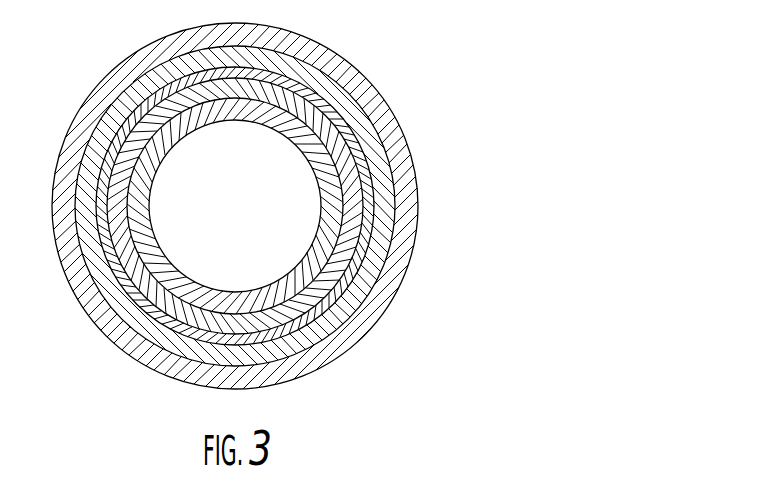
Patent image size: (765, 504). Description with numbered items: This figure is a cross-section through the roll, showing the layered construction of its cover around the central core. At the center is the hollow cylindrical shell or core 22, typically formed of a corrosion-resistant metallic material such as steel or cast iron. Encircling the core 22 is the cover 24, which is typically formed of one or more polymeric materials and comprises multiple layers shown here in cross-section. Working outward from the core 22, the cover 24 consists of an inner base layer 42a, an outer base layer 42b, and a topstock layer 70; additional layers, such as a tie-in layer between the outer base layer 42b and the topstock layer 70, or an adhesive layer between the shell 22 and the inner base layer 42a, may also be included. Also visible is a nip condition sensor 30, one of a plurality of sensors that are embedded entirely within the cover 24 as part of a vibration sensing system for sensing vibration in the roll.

The core 22 is at (338, 148).
The cover 24 is at (247, 221).
The nip condition sensor 30 is at (374, 164).
The inner base layer 42a is at (338, 128).
The outer base layer 42b is at (388, 192).
The topstock layer 70 is at (82, 303).